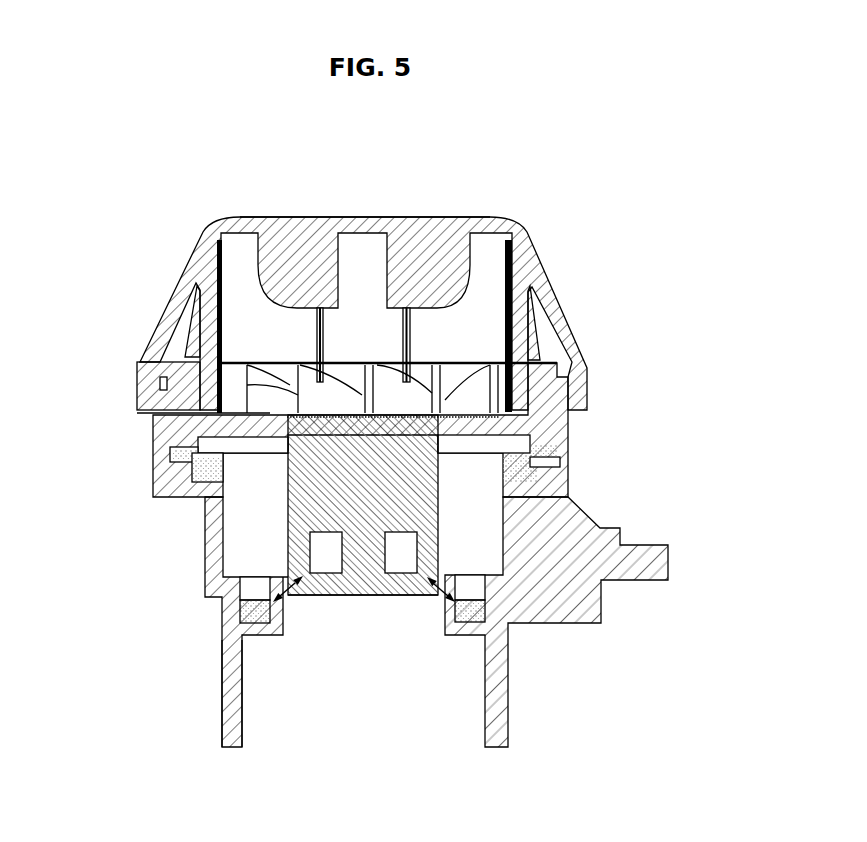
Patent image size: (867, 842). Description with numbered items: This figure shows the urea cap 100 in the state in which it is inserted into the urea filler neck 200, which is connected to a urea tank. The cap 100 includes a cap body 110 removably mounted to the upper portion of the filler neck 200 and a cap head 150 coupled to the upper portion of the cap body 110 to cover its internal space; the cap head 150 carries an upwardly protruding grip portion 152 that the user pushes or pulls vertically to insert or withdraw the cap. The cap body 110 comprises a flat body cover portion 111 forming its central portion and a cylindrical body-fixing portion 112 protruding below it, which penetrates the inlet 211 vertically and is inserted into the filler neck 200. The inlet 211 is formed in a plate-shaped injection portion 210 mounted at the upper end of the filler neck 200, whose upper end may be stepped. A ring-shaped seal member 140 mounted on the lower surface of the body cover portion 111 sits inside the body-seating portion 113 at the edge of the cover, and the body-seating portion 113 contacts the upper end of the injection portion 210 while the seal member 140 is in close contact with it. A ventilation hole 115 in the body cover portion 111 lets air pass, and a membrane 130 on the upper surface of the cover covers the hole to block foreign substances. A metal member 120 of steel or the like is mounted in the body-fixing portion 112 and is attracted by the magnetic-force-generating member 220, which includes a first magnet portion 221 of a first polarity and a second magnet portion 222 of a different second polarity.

The urea cap 100 is at (361, 278).
The cap body 110 is at (391, 555).
The body cover portion 111 is at (212, 421).
The body-fixing portion 112 is at (342, 597).
The body-seating portion 113 is at (573, 440).
The ventilation hole 115 is at (273, 427).
The metal member 120 is at (403, 568).
The membrane 130 is at (600, 403).
The seal member 140 is at (537, 472).
The cap head 150 is at (587, 320).
The grip portion 152 is at (445, 216).
The urea filler neck 200 is at (174, 597).
The injection portion 210 is at (176, 453).
The inlet 211 is at (229, 471).
The magnetic-force-generating member 220 is at (167, 690).
The first magnet portion 221 is at (245, 591).
The second magnet portion 222 is at (250, 612).